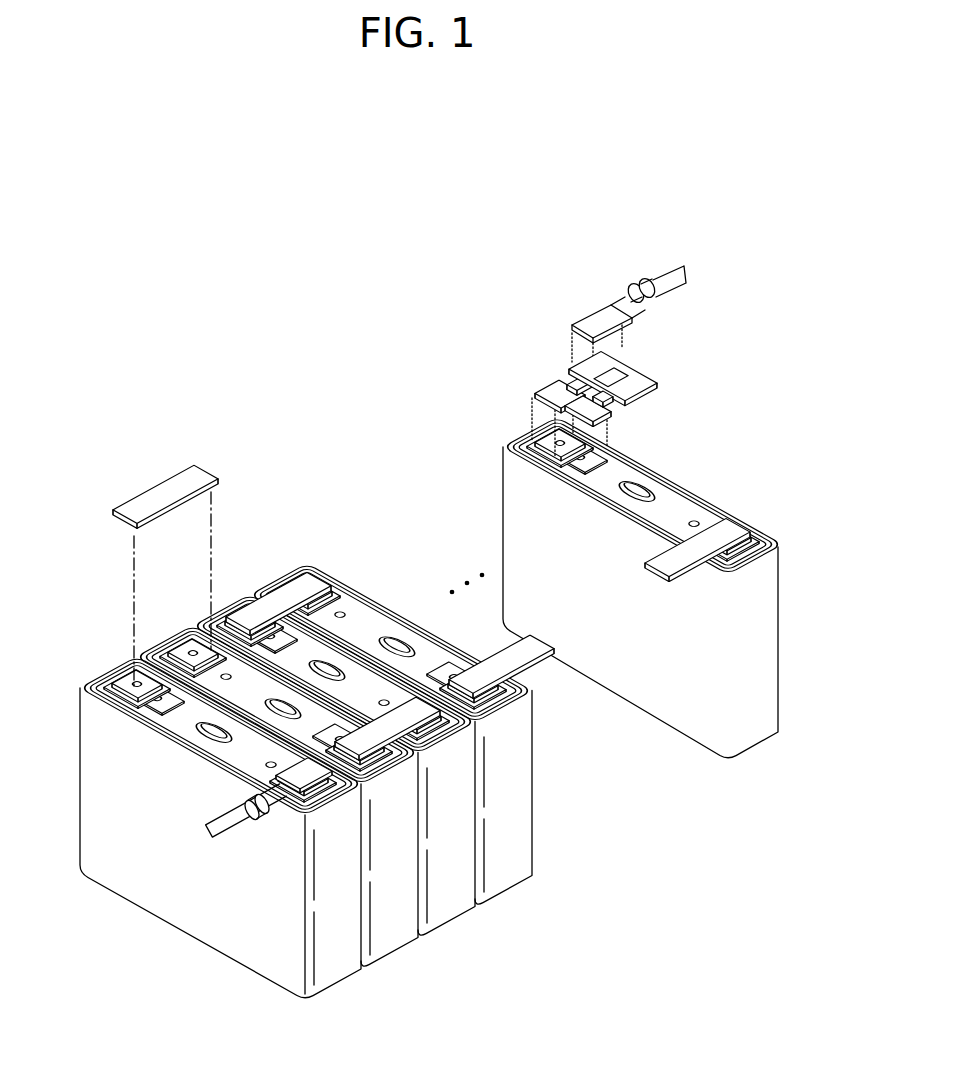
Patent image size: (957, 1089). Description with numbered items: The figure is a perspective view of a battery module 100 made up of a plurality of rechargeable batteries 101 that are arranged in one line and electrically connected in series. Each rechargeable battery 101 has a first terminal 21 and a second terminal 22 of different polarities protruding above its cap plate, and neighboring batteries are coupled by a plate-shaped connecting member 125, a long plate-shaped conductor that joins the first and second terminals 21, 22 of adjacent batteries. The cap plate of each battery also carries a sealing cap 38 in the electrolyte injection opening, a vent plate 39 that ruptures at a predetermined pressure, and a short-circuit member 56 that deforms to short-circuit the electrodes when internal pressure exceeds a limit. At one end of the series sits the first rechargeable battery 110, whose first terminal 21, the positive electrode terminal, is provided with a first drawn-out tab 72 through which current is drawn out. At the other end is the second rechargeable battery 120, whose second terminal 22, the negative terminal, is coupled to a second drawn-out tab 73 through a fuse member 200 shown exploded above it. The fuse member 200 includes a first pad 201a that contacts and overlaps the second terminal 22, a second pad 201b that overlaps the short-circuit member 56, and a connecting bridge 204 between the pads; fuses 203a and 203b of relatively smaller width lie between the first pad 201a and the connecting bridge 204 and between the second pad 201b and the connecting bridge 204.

The battery module 100 is at (257, 291).
The first rechargeable battery 110 is at (182, 932).
The second rechargeable battery 120 is at (694, 744).
The rechargeable battery 101 is at (410, 953).
The connecting member 125 is at (162, 494).
The first terminal 21 is at (186, 643).
The second terminal 22 is at (116, 686).
The short-circuit member 56 is at (155, 703).
The first drawn-out tab 72 is at (292, 795).
The second drawn-out tab 73 is at (606, 318).
The sealing cap 38 is at (692, 518).
The vent plate 39 is at (641, 488).
The fuse member 200 is at (382, 405).
The first pad 201a is at (545, 395).
The second pad 201b is at (610, 411).
The fuse 203a is at (562, 385).
The fuse 203b is at (612, 397).
The connecting bridge 204 is at (640, 365).